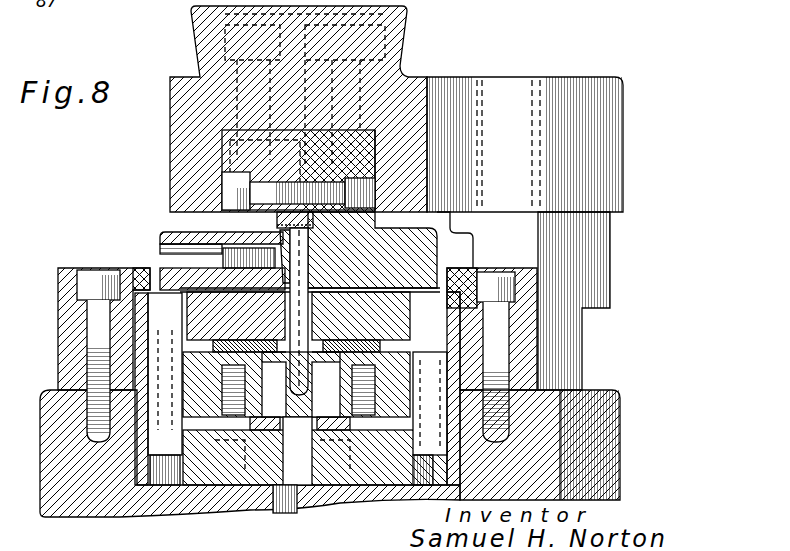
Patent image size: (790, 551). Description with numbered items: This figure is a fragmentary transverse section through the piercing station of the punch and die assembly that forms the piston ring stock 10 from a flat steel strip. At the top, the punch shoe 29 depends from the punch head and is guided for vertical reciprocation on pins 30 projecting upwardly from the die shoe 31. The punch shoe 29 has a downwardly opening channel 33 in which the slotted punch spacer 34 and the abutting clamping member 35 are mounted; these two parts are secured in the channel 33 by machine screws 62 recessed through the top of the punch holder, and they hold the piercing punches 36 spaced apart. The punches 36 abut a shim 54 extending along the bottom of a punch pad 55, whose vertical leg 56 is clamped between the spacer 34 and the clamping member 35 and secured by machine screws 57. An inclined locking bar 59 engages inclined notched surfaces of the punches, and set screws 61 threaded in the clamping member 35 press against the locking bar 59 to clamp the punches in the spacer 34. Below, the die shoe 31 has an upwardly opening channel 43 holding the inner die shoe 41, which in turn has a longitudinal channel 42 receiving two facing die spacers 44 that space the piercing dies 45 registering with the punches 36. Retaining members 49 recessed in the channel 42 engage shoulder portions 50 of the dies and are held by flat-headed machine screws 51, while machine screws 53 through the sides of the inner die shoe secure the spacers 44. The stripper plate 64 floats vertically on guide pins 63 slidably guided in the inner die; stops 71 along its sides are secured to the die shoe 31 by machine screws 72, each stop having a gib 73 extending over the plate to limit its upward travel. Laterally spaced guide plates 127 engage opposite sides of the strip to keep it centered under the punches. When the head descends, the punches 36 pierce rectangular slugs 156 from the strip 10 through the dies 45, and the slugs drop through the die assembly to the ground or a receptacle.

The piston ring stock 10 is at (301, 384).
The punch shoe 29 is at (620, 118).
The pins 30 is at (573, 342).
The die shoe 31 is at (624, 412).
The channel 33 is at (236, 130).
The punch spacer 34 is at (456, 236).
The clamping member 35 is at (167, 232).
The piercing punches 36 is at (330, 270).
The inner die shoe 41 is at (310, 440).
The channel 42 is at (387, 470).
The channel 43 is at (167, 477).
The die spacers 44 is at (214, 400).
The piercing dies 45 is at (266, 420).
The retaining members 49 is at (213, 344).
The shoulder portions 50 is at (308, 315).
The flat-headed machine screws 51 is at (245, 415).
The machine screws 53 is at (128, 483).
The shim 54 is at (273, 232).
The punch pad 55 is at (313, 225).
The vertical leg 56 is at (300, 175).
The machine screws 57 is at (222, 186).
The inclined locking bar 59 is at (280, 297).
The set screws 61 is at (223, 262).
The machine screws 62 is at (215, 27).
The guide pins 63 is at (143, 349).
The stripper plate 64 is at (140, 308).
The stops 71 is at (60, 340).
The machine screws 72 is at (96, 282).
The gib 73 is at (143, 270).
The guide plates 127 is at (220, 337).
The rectangular slugs 156 is at (300, 398).